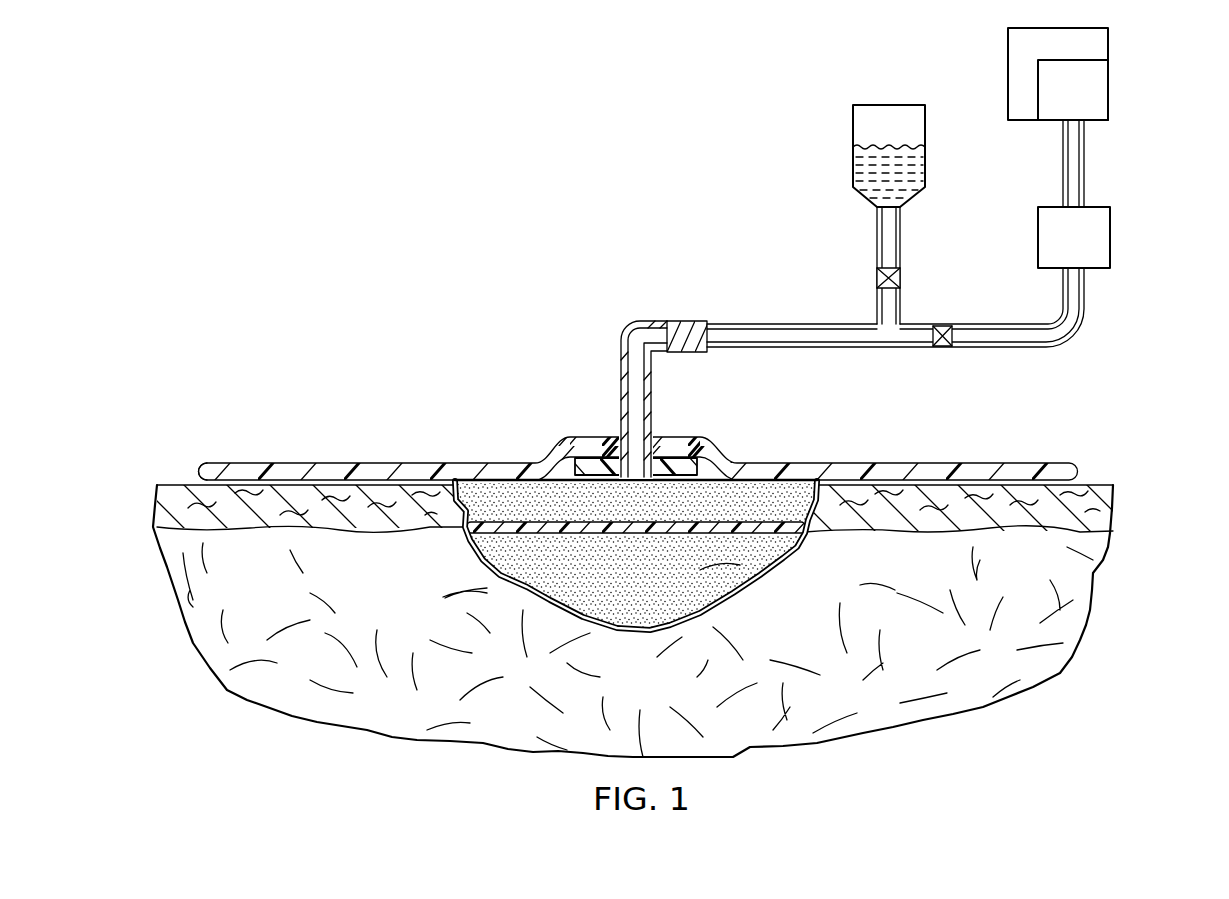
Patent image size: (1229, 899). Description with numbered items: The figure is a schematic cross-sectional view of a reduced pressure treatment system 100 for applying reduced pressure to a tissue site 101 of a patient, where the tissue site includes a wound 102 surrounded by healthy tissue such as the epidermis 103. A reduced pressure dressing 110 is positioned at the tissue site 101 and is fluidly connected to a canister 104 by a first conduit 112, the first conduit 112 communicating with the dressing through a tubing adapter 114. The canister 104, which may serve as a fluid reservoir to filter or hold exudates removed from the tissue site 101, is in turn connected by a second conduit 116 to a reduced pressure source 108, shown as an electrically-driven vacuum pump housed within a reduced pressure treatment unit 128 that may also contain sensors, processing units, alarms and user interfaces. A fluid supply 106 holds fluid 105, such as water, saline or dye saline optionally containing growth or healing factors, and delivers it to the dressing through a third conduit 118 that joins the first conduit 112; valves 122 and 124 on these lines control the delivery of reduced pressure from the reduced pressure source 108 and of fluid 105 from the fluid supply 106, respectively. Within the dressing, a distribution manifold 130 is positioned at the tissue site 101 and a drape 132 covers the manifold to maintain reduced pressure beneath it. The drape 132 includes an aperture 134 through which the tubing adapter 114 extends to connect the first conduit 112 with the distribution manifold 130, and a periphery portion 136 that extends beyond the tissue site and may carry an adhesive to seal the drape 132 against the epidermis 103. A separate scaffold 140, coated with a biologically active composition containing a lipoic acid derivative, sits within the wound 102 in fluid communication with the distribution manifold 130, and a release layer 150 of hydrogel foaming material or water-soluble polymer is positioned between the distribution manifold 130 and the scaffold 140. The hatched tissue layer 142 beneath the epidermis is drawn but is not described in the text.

The reduced pressure treatment system 100 is at (404, 154).
The tissue site 101 is at (652, 691).
The wound 102 is at (773, 568).
The epidermis 103 is at (252, 531).
The canister 104 is at (1110, 237).
The fluid 105 is at (927, 163).
The fluid supply 106 is at (927, 127).
The reduced pressure source 108 is at (1102, 87).
The reduced pressure dressing 110 is at (458, 363).
The first conduit 112 is at (818, 322).
The tubing adapter 114 is at (669, 320).
The second conduit 116 is at (1085, 165).
The third conduit 118 is at (877, 240).
The valve 122 is at (944, 348).
The valve 124 is at (900, 278).
The reduced pressure treatment unit 128 is at (1110, 43).
The distribution manifold 130 is at (527, 490).
The drape 132 is at (395, 462).
The aperture 134 is at (633, 426).
The periphery portion 136 is at (203, 463).
The scaffold 140 is at (655, 588).
The dermis layer 142 is at (328, 530).
The release layer 150 is at (486, 565).